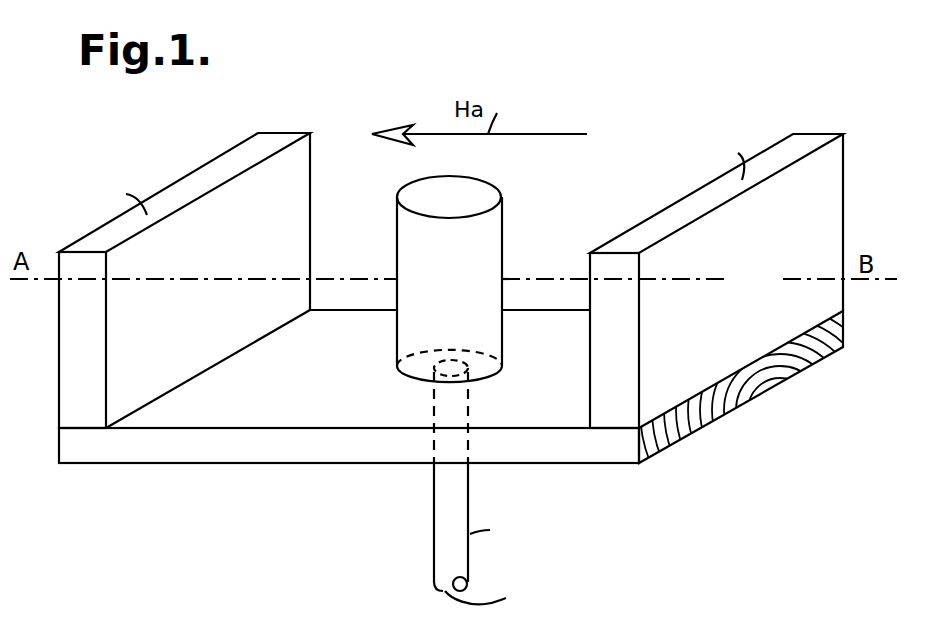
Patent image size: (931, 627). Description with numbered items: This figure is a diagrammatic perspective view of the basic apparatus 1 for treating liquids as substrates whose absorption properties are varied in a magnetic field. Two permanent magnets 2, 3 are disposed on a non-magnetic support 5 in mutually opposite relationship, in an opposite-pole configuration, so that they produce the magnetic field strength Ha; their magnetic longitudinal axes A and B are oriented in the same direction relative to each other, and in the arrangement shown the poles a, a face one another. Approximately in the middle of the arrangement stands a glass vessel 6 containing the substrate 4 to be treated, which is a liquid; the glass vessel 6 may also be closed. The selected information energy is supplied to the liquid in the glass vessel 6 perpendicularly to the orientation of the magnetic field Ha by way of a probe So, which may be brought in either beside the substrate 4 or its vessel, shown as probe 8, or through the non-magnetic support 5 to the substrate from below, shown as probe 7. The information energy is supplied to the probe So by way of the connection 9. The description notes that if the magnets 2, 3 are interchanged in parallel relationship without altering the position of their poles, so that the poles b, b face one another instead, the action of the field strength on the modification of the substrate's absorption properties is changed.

The magnetic field sensor apparatus 1 is at (352, 465).
The permanent magnet 2 is at (287, 136).
The permanent magnet 3 is at (811, 133).
The substrate 4 is at (490, 236).
The non-magnetic support 5 is at (212, 456).
The glass vessel 6 is at (490, 185).
The probe 7 is at (449, 345).
The probe 8 is at (460, 407).
The connection 9 is at (506, 598).